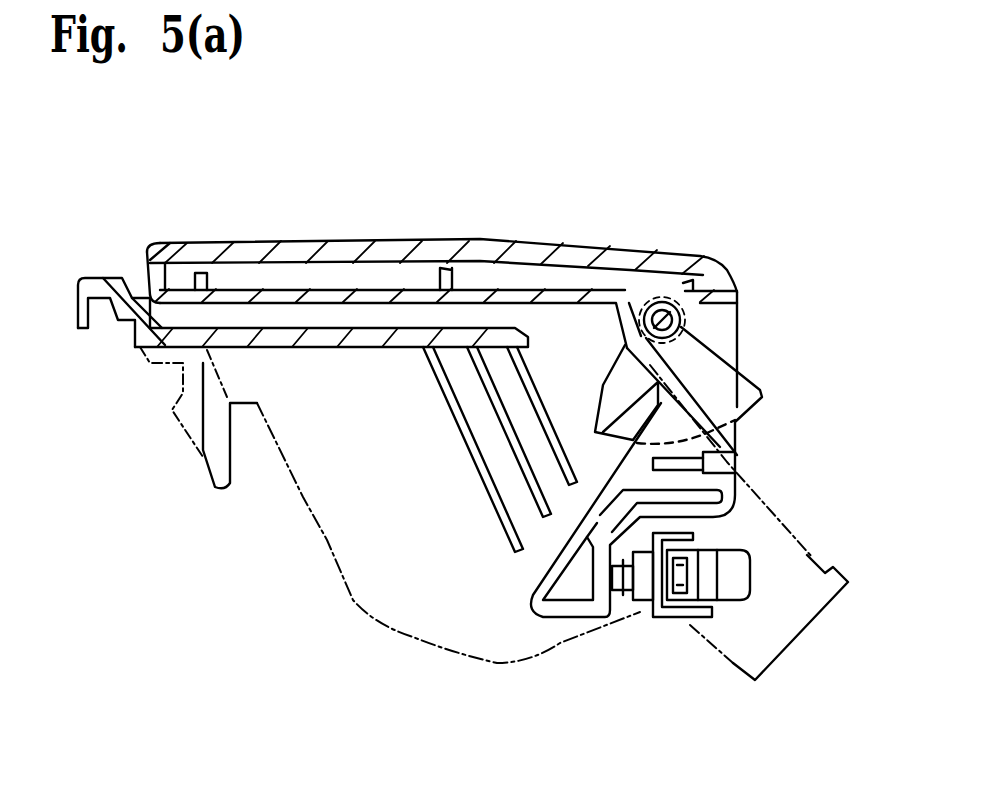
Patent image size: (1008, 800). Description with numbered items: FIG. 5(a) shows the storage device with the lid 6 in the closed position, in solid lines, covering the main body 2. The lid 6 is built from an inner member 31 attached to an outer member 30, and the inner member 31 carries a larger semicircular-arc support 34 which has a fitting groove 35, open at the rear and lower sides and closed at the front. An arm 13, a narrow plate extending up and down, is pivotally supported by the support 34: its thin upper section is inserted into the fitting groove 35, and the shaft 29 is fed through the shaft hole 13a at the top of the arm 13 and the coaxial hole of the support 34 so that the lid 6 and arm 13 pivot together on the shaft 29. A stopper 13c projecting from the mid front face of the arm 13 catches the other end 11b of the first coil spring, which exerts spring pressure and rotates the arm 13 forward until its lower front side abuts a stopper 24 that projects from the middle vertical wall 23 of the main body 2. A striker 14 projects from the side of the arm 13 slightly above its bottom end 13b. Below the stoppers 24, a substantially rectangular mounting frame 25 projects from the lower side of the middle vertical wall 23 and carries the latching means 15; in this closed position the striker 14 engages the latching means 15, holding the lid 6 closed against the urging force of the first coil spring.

The main body 2 is at (128, 352).
The lid 6 is at (150, 122).
The outer member 30 is at (212, 246).
The inner member 31 is at (188, 290).
The shaft 29 is at (660, 320).
The support 34 is at (748, 292).
The shaft hole 13a is at (671, 326).
The fitting groove 35 is at (742, 381).
The stopper 13c is at (735, 465).
The other end of first coil spring 11b is at (760, 490).
The latching means 15 is at (752, 616).
The arm 13 is at (530, 634).
The bottom end 13b is at (577, 612).
The striker 14 is at (620, 583).
The mounting frame 25 is at (665, 612).
The middle vertical wall 23 is at (317, 488).
The stopper 24 is at (517, 552).